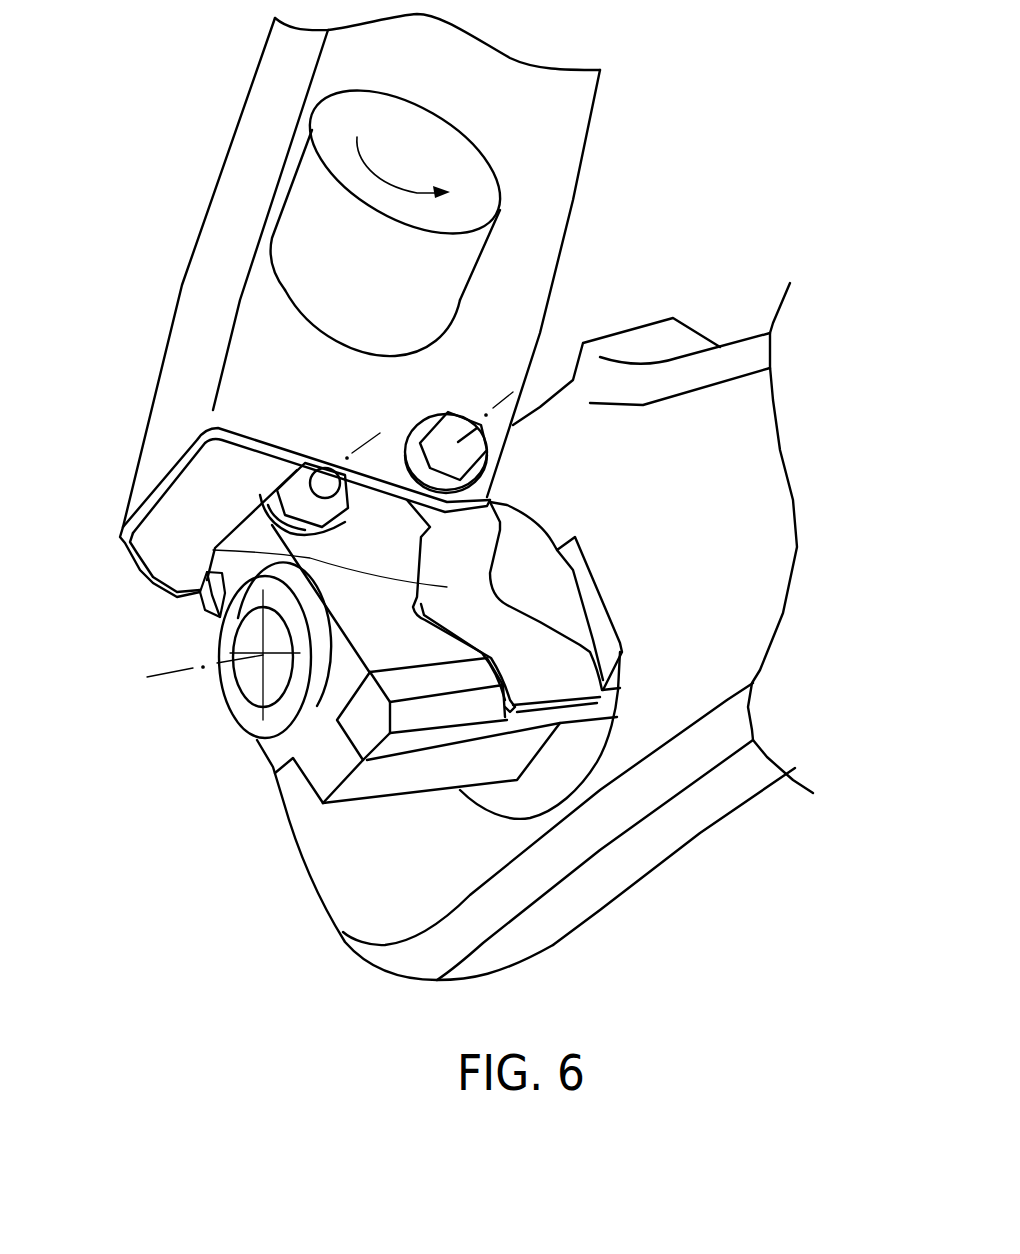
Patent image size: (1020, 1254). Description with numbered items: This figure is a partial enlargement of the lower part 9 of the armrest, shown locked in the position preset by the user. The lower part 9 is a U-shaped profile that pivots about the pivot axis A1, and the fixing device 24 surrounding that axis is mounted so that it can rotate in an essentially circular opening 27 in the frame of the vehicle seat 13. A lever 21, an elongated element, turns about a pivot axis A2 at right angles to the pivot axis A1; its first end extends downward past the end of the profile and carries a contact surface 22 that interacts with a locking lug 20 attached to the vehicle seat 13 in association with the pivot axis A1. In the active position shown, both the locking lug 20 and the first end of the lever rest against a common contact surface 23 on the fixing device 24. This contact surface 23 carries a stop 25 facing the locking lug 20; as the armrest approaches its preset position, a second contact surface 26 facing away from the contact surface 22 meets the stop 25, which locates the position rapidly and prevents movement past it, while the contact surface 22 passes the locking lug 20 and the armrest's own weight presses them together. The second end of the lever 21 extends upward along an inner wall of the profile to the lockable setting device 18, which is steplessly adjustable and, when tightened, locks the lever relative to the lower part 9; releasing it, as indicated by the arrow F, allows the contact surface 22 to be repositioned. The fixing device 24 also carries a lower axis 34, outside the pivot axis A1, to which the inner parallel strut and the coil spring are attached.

The lower part 9 is at (197, 290).
The setting device 18 is at (279, 220).
The arrow F is at (322, 135).
The vehicle seat 13 is at (688, 370).
The lower axis 34 is at (335, 483).
The lever 21 is at (203, 600).
The pivot axis of the lever A2 is at (505, 380).
The pivot axis of the armrest A1 is at (260, 657).
The stop 25 is at (507, 657).
The locking lug 20 is at (610, 657).
The contact surface 22 is at (622, 670).
The fixing device 24 is at (317, 770).
The second contact surface 26 is at (497, 678).
The contact surface 23 is at (508, 723).
The circular opening 27 is at (553, 790).